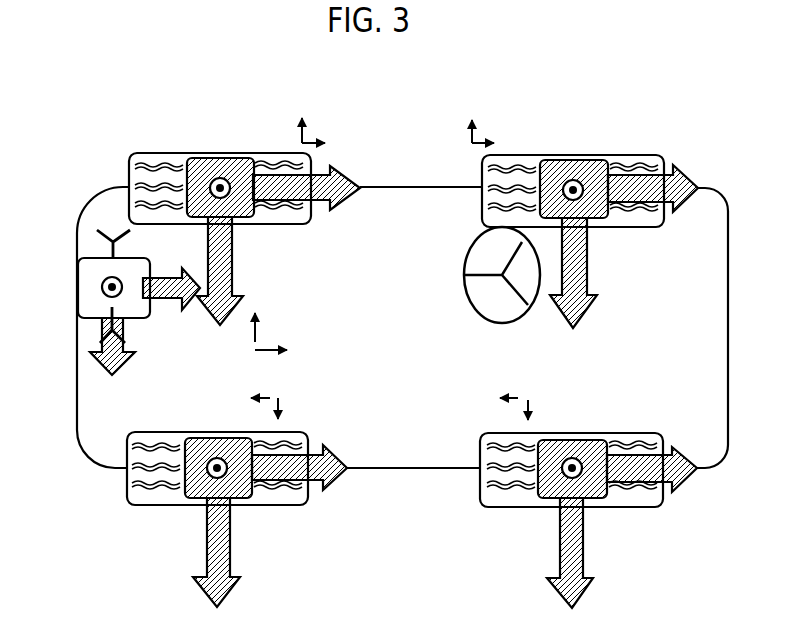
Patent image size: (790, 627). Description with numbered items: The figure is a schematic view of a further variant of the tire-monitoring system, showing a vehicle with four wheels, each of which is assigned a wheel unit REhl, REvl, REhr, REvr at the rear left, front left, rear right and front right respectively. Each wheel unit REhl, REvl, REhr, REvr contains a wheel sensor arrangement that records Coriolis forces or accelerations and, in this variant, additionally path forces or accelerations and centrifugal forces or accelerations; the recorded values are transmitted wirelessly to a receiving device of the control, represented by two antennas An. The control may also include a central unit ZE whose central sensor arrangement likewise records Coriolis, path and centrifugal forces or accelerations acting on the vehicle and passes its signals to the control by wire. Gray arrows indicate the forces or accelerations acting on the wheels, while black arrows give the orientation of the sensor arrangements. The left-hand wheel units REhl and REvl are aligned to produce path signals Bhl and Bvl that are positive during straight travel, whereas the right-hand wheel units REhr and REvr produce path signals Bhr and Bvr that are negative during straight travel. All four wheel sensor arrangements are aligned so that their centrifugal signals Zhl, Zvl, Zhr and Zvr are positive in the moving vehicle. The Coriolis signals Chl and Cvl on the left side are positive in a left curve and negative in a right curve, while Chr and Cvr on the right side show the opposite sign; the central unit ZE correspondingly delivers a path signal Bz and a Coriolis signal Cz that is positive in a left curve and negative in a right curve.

The wheel unit, rear left REhl is at (220, 168).
The path force or acceleration signal, rear left Bhl is at (307, 204).
The centrifugal force or acceleration signal, rear left Zhl is at (236, 206).
The Coriolis force or acceleration signal, rear left Chl is at (236, 271).
The wheel unit, front left REvl is at (573, 168).
The path force or acceleration signal, front left Bvl is at (658, 200).
The centrifugal force or acceleration signal, front left Zvl is at (589, 207).
The Coriolis force or acceleration signal, front left Cvl is at (590, 273).
The wheel unit, rear right REhr is at (217, 447).
The path force or acceleration signal, rear right Bhr is at (303, 481).
The centrifugal force or acceleration signal, rear right Zhr is at (234, 485).
The Coriolis force or acceleration signal, rear right Chr is at (235, 552).
The wheel unit, front right REvr is at (571, 448).
The path force or acceleration signal, front right Bvr is at (657, 483).
The centrifugal force or acceleration signal, front right Zvr is at (587, 488).
The Coriolis force or acceleration signal, front right Cvr is at (587, 553).
The central unit ZE is at (92, 288).
The central path force or acceleration signal Bz is at (171, 275).
The central Coriolis force or acceleration signal Cz is at (117, 353).
The antenna An is at (110, 243).